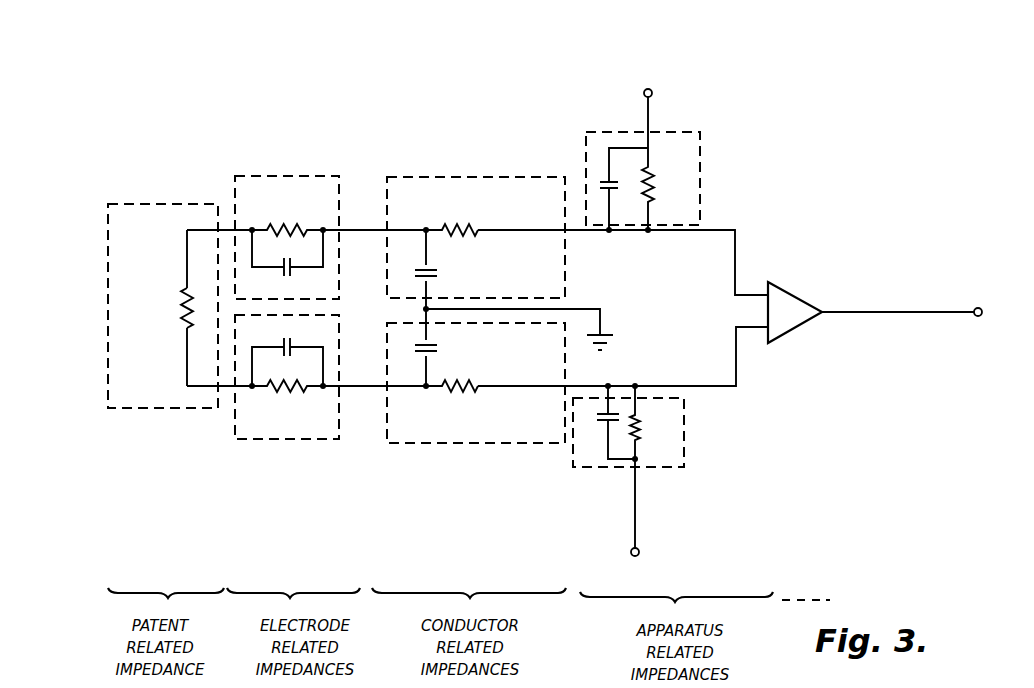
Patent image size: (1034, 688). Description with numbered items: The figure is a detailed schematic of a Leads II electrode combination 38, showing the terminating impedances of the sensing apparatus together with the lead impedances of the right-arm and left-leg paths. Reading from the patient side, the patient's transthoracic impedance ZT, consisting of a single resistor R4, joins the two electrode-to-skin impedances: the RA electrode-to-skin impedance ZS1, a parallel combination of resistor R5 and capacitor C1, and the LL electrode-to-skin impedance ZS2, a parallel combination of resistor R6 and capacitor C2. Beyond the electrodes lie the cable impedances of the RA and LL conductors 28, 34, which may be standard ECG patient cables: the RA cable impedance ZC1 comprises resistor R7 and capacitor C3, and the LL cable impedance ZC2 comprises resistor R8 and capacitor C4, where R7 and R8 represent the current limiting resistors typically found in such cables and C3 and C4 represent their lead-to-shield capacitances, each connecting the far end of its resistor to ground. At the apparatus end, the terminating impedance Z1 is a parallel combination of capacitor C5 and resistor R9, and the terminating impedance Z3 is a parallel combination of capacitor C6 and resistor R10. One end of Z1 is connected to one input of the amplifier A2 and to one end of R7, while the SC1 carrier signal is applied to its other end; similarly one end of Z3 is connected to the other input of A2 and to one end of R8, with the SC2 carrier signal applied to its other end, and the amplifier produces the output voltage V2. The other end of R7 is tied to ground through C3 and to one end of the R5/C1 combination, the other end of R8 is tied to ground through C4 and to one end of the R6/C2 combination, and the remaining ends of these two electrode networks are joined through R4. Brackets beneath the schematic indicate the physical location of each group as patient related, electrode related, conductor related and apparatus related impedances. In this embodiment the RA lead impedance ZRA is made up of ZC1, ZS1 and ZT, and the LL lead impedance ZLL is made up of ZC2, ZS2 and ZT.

The Leads II electrode combination 38 is at (474, 91).
The RA conductor 28 is at (737, 244).
The LL conductor 34 is at (738, 375).
The resistor R4 is at (174, 308).
The resistor R5 is at (287, 218).
The resistor R6 is at (287, 399).
The resistor R7 is at (452, 218).
The resistor R8 is at (452, 375).
The resistor R9 is at (663, 189).
The resistor R10 is at (653, 422).
The capacitor C1 is at (287, 253).
The capacitor C2 is at (287, 353).
The capacitor C3 is at (440, 275).
The capacitor C4 is at (440, 350).
The capacitor C5 is at (624, 189).
The capacitor C6 is at (609, 422).
The amplifier A2 is at (871, 308).
The terminating impedance Z1 is at (700, 157).
The terminating impedance Z3 is at (575, 467).
The output voltage V2 is at (997, 311).
The carrier signal SC1 is at (647, 104).
The carrier signal SC2 is at (632, 520).
The transthoracic impedance ZT is at (172, 410).
The electrode-to-skin impedance ZS1 is at (335, 175).
The electrode-to-skin impedance ZS2 is at (298, 441).
The cable impedance ZC1 is at (527, 177).
The cable impedance ZC2 is at (472, 443).
The RA lead impedance ZRA is at (396, 125).
The LL lead impedance ZLL is at (361, 501).